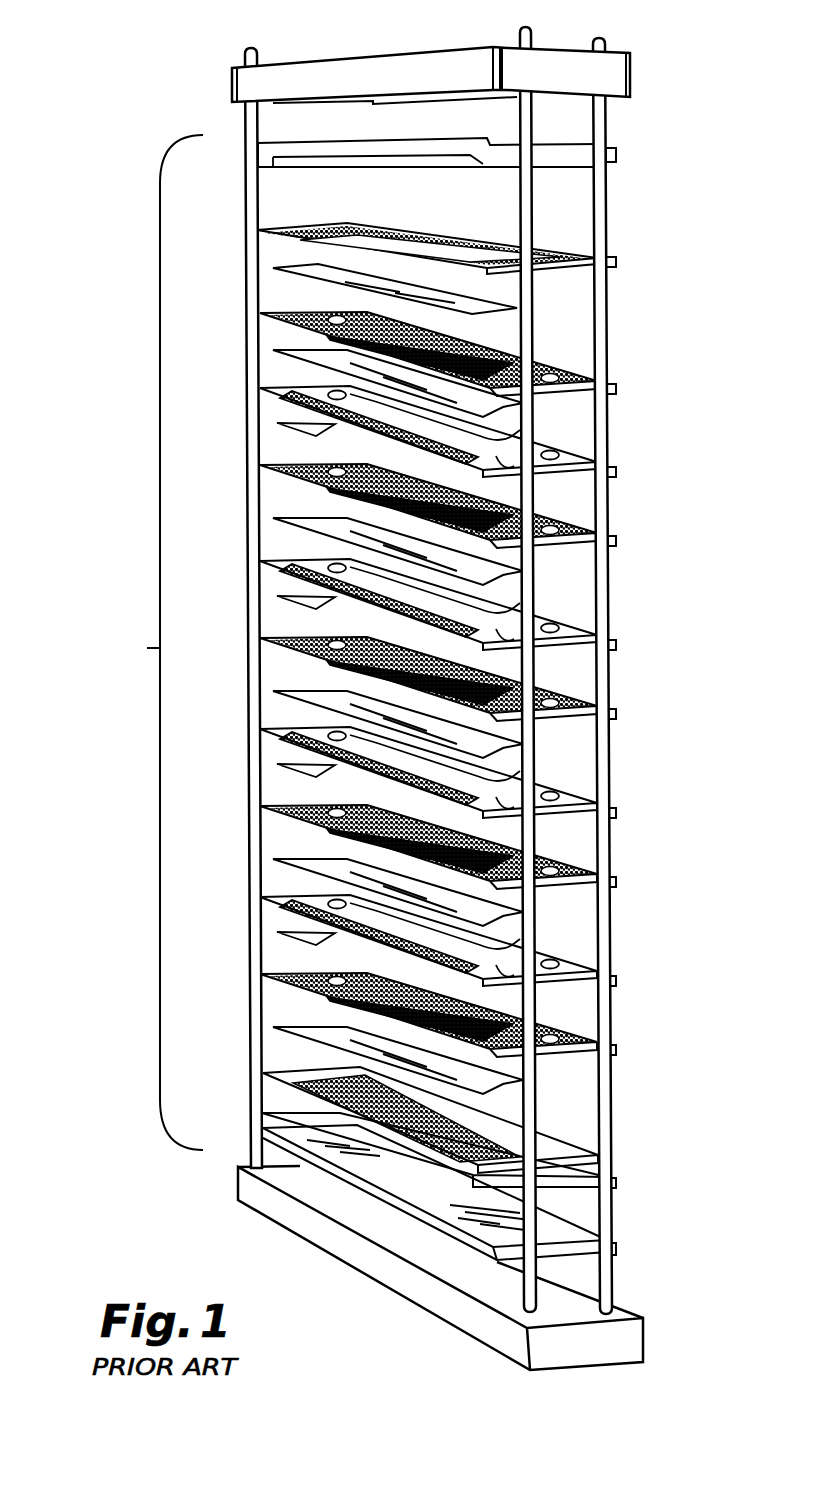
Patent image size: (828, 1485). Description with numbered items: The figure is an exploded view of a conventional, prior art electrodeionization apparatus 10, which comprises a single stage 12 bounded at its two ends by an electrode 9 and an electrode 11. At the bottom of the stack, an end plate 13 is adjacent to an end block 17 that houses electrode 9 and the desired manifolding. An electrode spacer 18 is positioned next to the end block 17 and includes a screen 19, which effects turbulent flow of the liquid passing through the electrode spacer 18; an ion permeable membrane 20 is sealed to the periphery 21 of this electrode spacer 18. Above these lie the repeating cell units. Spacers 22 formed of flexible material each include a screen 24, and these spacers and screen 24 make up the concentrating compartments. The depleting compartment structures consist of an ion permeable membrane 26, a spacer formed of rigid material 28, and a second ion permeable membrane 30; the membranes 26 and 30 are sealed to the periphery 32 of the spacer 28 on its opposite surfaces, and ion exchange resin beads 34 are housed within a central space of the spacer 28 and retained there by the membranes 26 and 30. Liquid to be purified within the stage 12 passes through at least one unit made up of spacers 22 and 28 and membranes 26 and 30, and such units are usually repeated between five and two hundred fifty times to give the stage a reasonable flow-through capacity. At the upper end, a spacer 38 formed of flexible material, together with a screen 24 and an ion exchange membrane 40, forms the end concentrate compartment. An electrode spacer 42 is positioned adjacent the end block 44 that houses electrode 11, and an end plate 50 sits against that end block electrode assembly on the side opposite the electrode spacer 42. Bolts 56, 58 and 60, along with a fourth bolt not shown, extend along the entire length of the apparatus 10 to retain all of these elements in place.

The electrode 9 is at (382, 1166).
The electrodeionization apparatus 10 is at (118, 163).
The electrode 11 is at (367, 168).
The stage 12 is at (158, 642).
The end plate 13 is at (643, 1338).
The end block 17 is at (616, 1250).
The electrode spacer 18 is at (616, 1183).
The screen 19 is at (320, 1083).
The ion permeable membrane 20 is at (540, 1108).
The periphery 21 is at (570, 1165).
The spacer 22 is at (616, 541).
The screen 24 is at (330, 493).
The ion permeable membrane 26 is at (556, 486).
The spacer formed of rigid material 28 is at (616, 472).
The ion permeable membrane 30 is at (533, 414).
The periphery 32 is at (262, 388).
The ion exchange resin beads 34 is at (327, 427).
The spacer formed of flexible material 38 is at (616, 386).
The ion exchange membrane 40 is at (545, 297).
The electrode spacer 42 is at (616, 262).
The end block 44 is at (616, 154).
The end plate 50 is at (634, 78).
The bolt 56 is at (262, 47).
The bolt 58 is at (531, 30).
The bolt 60 is at (611, 34).